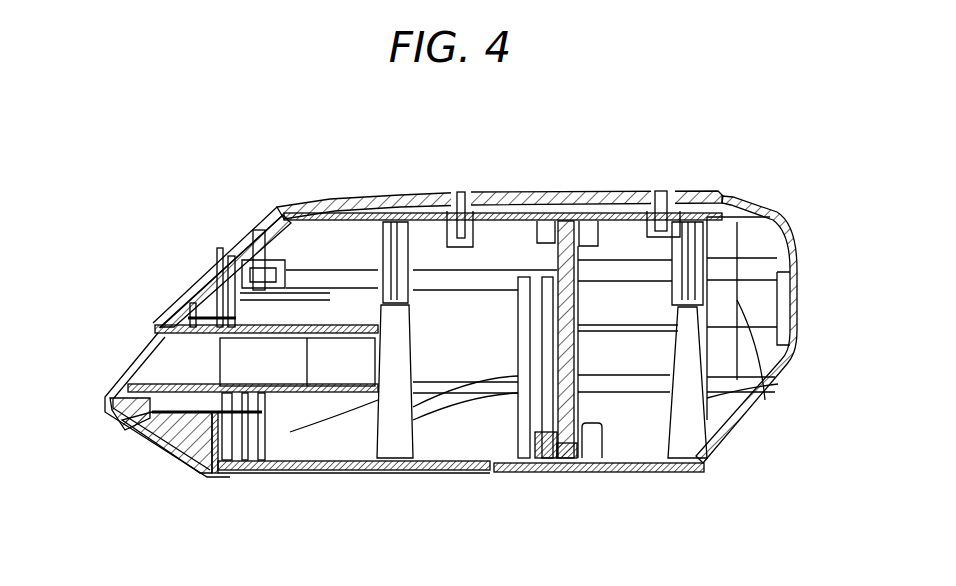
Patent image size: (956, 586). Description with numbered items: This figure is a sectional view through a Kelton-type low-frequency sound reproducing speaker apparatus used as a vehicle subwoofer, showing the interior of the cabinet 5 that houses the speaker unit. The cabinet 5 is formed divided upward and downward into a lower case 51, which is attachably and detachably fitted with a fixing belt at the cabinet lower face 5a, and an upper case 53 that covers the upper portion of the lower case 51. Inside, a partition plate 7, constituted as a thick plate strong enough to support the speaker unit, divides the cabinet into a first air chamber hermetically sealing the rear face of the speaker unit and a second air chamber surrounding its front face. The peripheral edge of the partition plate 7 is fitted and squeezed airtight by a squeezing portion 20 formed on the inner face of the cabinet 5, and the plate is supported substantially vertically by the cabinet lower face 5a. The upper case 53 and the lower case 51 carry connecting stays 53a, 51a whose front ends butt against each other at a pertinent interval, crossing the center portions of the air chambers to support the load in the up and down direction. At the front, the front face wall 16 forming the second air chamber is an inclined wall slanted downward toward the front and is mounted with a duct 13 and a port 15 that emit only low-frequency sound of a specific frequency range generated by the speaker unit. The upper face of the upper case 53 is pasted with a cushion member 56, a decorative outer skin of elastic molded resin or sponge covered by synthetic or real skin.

The cabinet 5 is at (862, 232).
The cabinet lower face 5a is at (450, 470).
The partition plate 7 is at (570, 348).
The duct 13 is at (132, 396).
The port 15 is at (185, 382).
The front face wall 16 is at (186, 287).
The squeezing portion 20 is at (592, 240).
The lower case 51 is at (765, 407).
The connecting stay 51a is at (387, 423).
The upper case 53 is at (796, 243).
The connecting stay 53a is at (378, 262).
The cushion member 56 is at (276, 209).